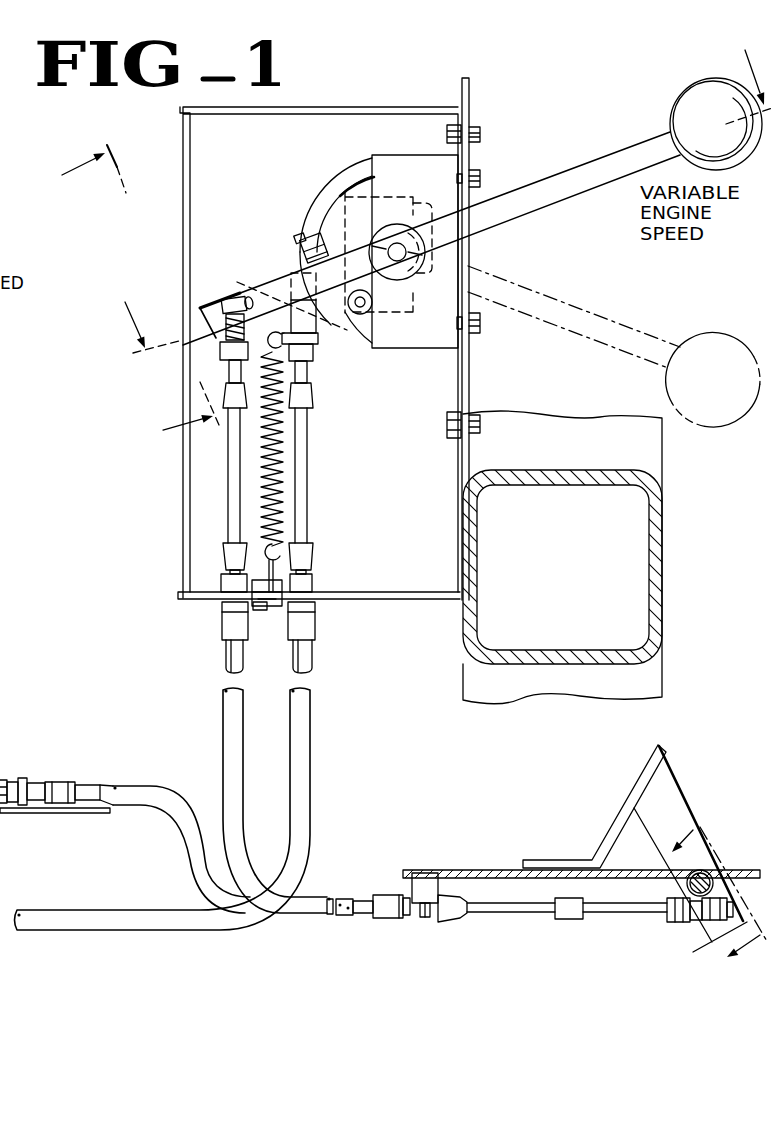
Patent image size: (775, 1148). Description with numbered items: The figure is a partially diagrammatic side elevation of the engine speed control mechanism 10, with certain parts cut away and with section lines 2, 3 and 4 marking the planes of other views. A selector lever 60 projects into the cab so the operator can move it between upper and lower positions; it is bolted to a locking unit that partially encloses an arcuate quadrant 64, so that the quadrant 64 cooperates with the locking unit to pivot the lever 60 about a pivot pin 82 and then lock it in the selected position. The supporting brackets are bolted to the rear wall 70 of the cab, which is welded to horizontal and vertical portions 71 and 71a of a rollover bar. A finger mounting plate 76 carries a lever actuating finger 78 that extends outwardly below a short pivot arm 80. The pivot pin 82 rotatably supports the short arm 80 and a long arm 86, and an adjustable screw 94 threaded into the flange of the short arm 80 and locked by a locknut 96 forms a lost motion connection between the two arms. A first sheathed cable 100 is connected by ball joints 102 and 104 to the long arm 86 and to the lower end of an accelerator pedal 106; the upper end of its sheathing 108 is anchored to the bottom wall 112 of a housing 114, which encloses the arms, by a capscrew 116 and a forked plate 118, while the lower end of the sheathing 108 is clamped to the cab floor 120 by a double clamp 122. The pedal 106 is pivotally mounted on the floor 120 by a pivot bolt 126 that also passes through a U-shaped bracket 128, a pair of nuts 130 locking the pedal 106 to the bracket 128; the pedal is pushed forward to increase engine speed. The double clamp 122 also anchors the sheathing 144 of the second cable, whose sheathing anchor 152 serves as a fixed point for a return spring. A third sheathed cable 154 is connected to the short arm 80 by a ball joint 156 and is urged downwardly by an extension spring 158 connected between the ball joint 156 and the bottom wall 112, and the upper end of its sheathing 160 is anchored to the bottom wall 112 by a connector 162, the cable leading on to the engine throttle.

The section line 2- 2 is at (441, 200).
The section line 3- 3 is at (140, 287).
The section line 4- 4 is at (716, 897).
The engine speed control mechanism 10 is at (500, 108).
The selector lever 60 is at (556, 204).
The arcuate quadrant 64 is at (313, 200).
The rear wall 70 is at (466, 392).
The horizontal portion of rollover bar 71 is at (662, 500).
The vertical portion of rollover bar 71a is at (657, 455).
The finger mounting plate 76 is at (360, 188).
The lever actuating finger 78 is at (370, 296).
The short pivot arm 80 is at (400, 243).
The pivot pin 82 is at (406, 251).
The long arm 86 is at (187, 347).
The adjustable screw 94 is at (307, 235).
The locknut 96 is at (303, 253).
The first sheathed cable 100 is at (230, 373).
The ball joint 102 is at (218, 308).
The ball joint 104 is at (720, 903).
The accelerator pedal 106 is at (620, 807).
The sheathing 108 is at (225, 692).
The bottom wall 112 is at (383, 600).
The housing 114 is at (178, 119).
The capscrew 116 is at (248, 614).
The forked plate 118 is at (220, 587).
The floor 120 is at (478, 872).
The double clamp 122 is at (426, 880).
The pivot bolt 126 is at (708, 877).
The U-shaped bracket 128 is at (707, 943).
The nuts 130 is at (684, 887).
The sheathing 144 is at (115, 782).
The sheathing anchor 152 is at (18, 815).
The third sheathed cable 154 is at (308, 372).
The ball joint 156 is at (342, 337).
The extension spring 158 is at (280, 447).
The sheathing 160 is at (310, 693).
The connector 162 is at (317, 585).